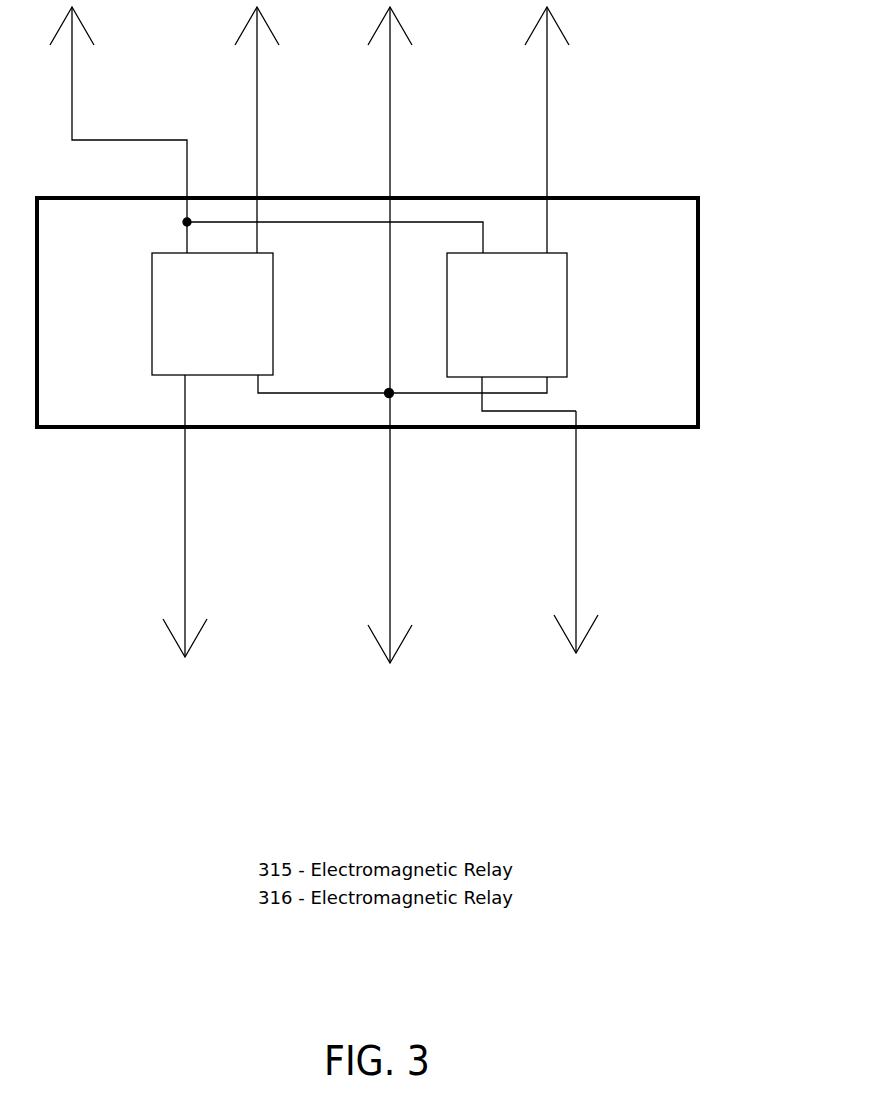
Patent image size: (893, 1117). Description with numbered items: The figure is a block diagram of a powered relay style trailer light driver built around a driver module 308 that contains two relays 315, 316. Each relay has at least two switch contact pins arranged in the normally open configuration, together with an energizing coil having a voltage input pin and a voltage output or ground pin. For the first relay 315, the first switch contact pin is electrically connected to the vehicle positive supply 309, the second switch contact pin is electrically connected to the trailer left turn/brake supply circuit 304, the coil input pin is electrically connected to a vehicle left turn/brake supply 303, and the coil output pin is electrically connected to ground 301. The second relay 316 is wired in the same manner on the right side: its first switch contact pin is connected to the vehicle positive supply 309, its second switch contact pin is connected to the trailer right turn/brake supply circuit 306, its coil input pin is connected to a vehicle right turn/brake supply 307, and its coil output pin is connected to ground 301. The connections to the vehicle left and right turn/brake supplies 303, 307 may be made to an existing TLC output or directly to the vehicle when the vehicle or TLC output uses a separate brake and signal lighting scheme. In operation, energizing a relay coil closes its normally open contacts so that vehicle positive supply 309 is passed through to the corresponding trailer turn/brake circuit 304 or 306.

The ground 301 is at (390, 117).
The vehicle left turn/brake supply 303 is at (257, 117).
The trailer left turn/brake supply circuit 304 is at (185, 545).
The trailer right turn/brake supply circuit 306 is at (576, 552).
The vehicle right turn/brake supply 307 is at (547, 120).
The driver module 308 is at (698, 306).
The vehicle positive supply 309 is at (72, 117).
The relay 315 is at (273, 332).
The relay 316 is at (567, 332).